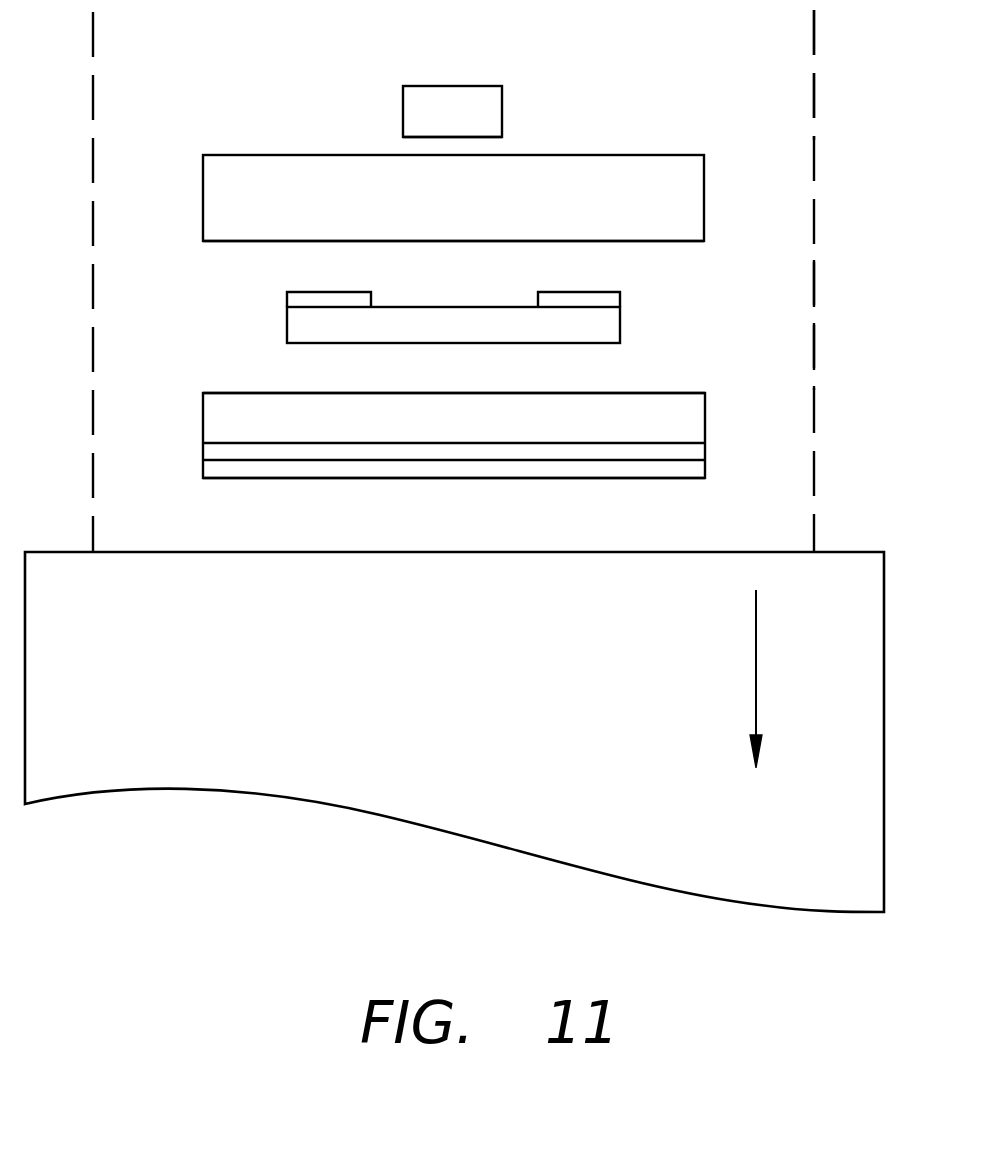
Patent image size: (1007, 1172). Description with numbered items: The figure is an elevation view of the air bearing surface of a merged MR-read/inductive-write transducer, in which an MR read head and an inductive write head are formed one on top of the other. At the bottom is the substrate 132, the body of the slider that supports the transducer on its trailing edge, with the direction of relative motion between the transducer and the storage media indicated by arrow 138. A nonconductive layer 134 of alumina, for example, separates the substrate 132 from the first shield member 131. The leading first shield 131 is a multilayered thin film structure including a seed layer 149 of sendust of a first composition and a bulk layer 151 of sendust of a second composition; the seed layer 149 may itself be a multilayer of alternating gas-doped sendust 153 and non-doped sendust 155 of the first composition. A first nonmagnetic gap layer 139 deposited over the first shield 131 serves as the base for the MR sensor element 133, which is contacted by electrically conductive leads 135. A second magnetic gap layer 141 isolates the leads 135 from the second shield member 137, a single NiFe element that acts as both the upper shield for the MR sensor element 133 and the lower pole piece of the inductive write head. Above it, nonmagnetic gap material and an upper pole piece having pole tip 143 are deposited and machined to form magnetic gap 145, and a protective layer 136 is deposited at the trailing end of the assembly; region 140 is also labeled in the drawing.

The first shield member 131 is at (706, 432).
The substrate 132 is at (473, 700).
The MR sensor element 133 is at (620, 330).
The nonconductive layer 134 is at (474, 533).
The electrically conductive leads 135 is at (340, 292).
The protective layer 136 is at (480, 36).
The second shield member 137 is at (704, 197).
The arrow 138 is at (757, 645).
The first nonmagnetic gap layer 139 is at (680, 367).
The upper region 140 is at (728, 98).
The second magnetic gap layer 141 is at (700, 248).
The pole tip 143 is at (505, 105).
The magnetic gap 145 is at (490, 147).
The seed layer 149 is at (706, 478).
The bulk layer 151 is at (706, 423).
The gas-doped sendust layer 153 is at (203, 466).
The non-doped sendust layer 155 is at (203, 452).